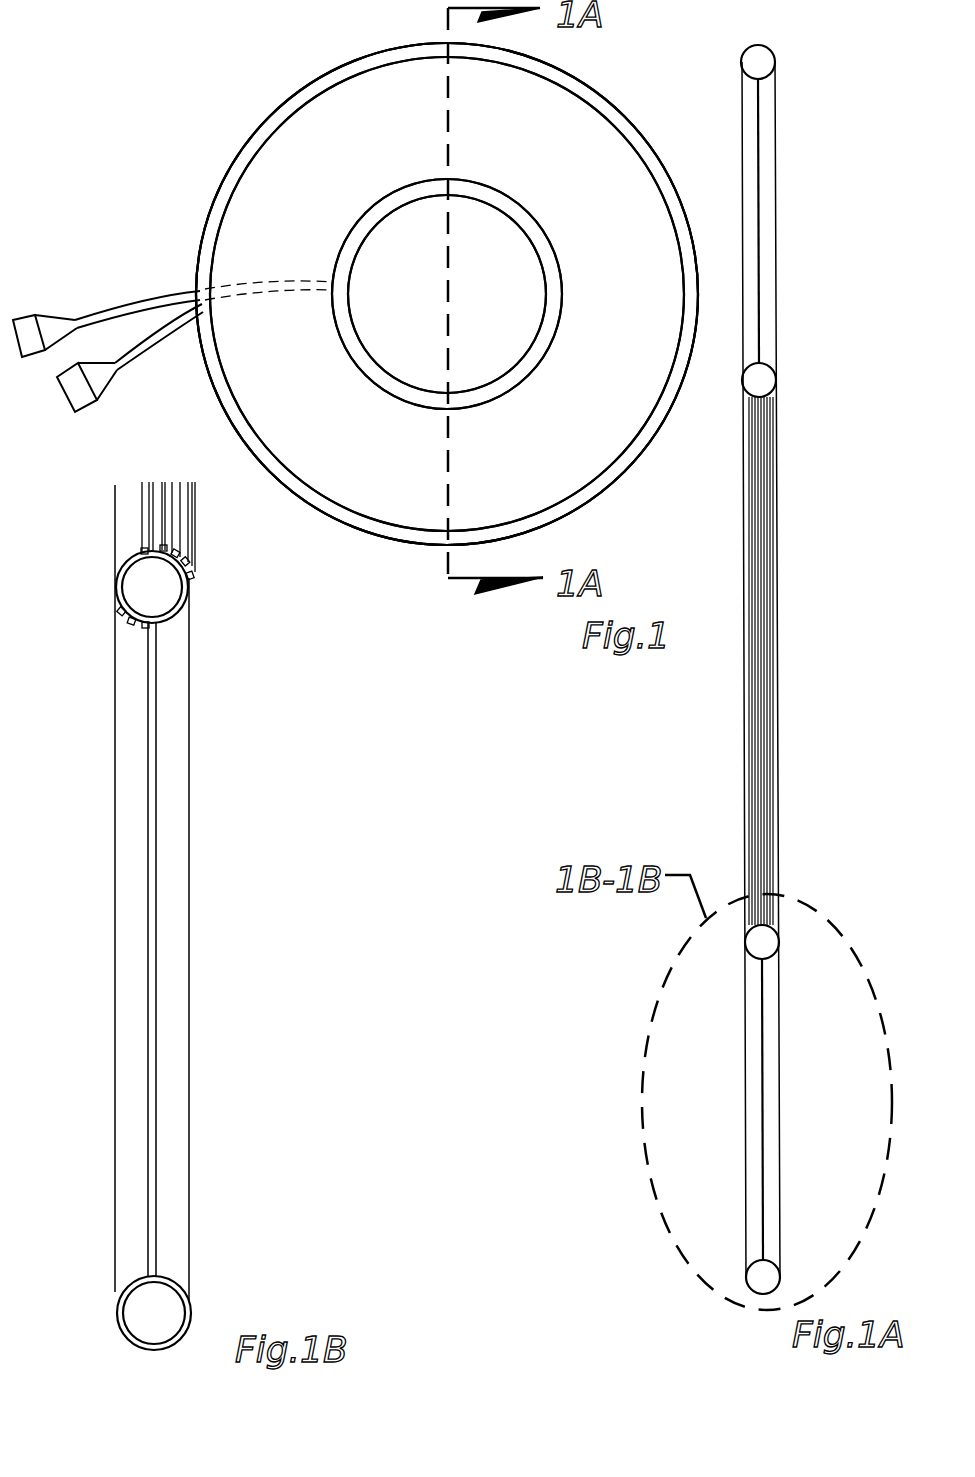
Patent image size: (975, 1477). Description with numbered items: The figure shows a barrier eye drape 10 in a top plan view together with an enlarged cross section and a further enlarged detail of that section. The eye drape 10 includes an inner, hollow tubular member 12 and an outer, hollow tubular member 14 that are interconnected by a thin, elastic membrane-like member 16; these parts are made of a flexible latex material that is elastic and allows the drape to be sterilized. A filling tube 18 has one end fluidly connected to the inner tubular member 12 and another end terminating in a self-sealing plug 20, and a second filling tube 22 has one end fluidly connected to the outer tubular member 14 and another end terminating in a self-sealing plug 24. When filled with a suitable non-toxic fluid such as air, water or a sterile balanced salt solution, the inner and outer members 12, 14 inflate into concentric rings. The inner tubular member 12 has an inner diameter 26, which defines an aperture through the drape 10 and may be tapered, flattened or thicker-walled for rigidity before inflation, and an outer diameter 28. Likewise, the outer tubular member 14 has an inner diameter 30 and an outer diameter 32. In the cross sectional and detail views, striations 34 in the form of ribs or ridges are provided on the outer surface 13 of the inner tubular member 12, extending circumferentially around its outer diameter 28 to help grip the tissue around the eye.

In FIG. 1, the eye drape 10 is at (147, 93).
In FIG. 1, the inner tubular member 12 is at (378, 368).
In FIG. 1A, the inner tubular member 12 is at (775, 952).
In FIG. 1B, the inner tubular member 12 is at (172, 612).
In FIG. 1A, the outer surface 13 is at (750, 719).
In FIG. 1B, the outer surface 13 is at (158, 622).
In FIG. 1, the outer tubular member 14 is at (218, 200).
In FIG. 1A, the outer tubular member 14 is at (757, 1262).
In FIG. 1B, the outer tubular member 14 is at (165, 1280).
In FIG. 1, the membrane-like member 16 is at (378, 466).
In FIG. 1A, the membrane-like member 16 is at (760, 1062).
In FIG. 1B, the membrane-like member 16 is at (152, 905).
In FIG. 1, the filling tube 18 is at (140, 362).
In FIG. 1, the self-sealing plug 20 is at (85, 408).
In FIG. 1, the filling tube 22 is at (157, 300).
In FIG. 1, the self-sealing plug 24 is at (40, 320).
In FIG. 1, the inner diameter 26 is at (538, 258).
In FIG. 1, the outer diameter 28 is at (508, 197).
In FIG. 1, the inner diameter 30 is at (328, 92).
In FIG. 1, the outer diameter 32 is at (333, 68).
In FIG. 1B, the striations 34 is at (143, 535).